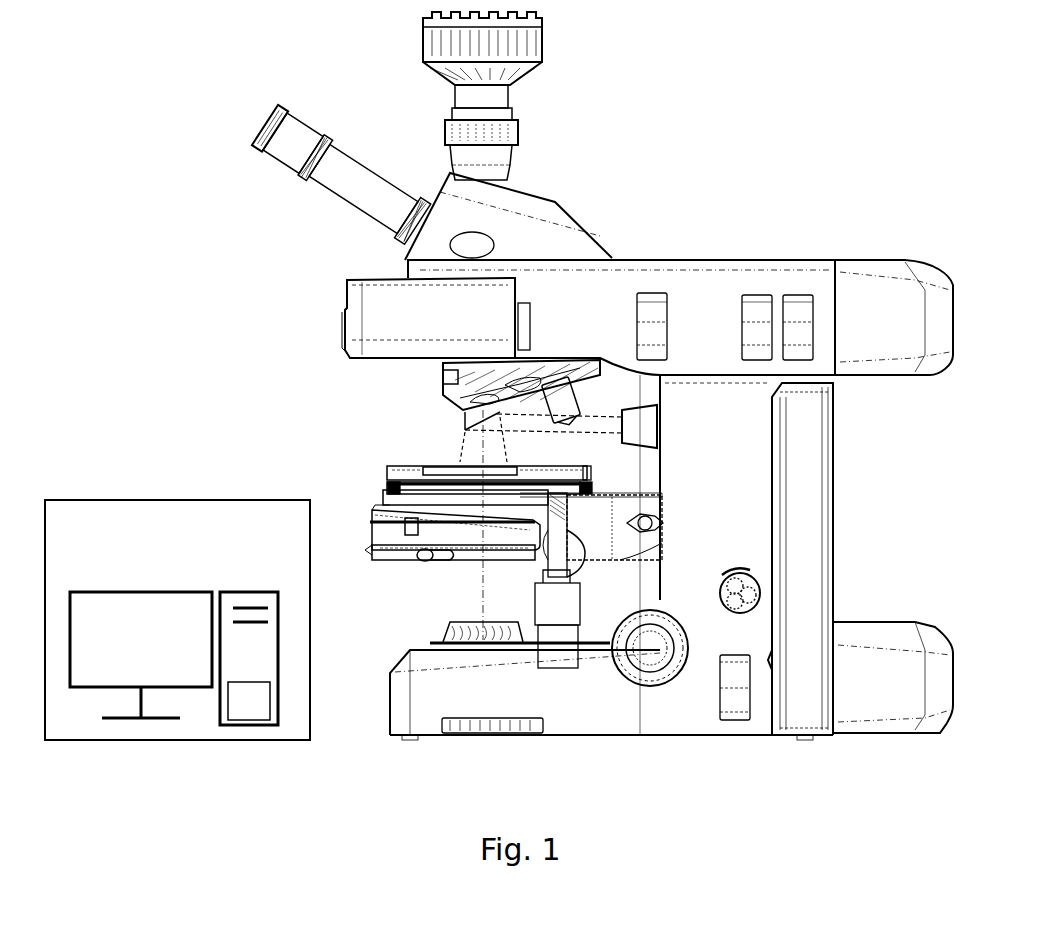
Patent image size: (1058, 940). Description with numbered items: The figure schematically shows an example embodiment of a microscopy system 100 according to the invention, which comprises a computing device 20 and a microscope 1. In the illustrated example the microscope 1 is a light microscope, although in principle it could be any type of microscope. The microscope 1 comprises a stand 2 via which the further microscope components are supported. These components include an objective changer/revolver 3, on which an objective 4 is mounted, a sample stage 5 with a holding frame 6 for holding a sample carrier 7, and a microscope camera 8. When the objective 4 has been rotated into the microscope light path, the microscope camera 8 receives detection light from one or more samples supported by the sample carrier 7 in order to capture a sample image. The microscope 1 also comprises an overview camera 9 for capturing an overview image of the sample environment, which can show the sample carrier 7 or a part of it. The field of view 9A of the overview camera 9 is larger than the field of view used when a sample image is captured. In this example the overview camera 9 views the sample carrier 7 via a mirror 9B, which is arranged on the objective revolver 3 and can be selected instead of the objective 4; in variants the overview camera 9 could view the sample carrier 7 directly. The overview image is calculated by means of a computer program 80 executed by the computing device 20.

The microscopy system 100 is at (822, 104).
The microscope 1 is at (808, 241).
The stand 2 is at (815, 487).
The objective changer/revolver 3 is at (443, 378).
The objective 4 is at (577, 392).
The sample stage 5 is at (405, 490).
The holding frame 6 is at (387, 480).
The sample carrier 7 is at (423, 472).
The microscope camera 8 is at (530, 36).
The overview camera 9 is at (647, 439).
The field of view 9A is at (460, 452).
The mirror 9B is at (463, 420).
The computing device 20 is at (188, 550).
The computer program 80 is at (262, 715).